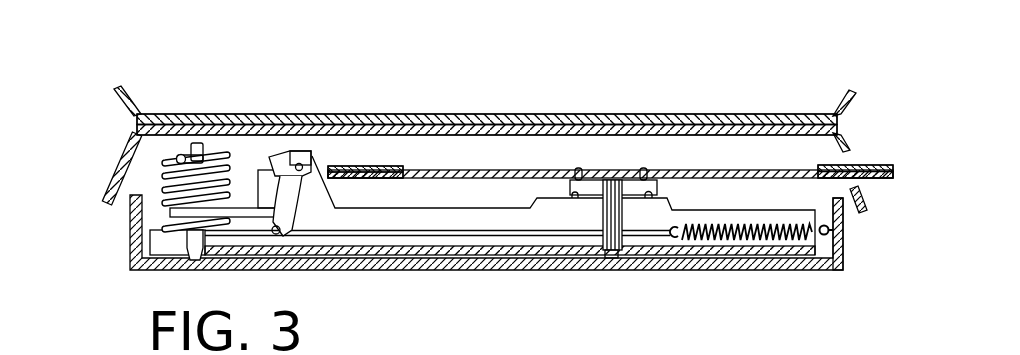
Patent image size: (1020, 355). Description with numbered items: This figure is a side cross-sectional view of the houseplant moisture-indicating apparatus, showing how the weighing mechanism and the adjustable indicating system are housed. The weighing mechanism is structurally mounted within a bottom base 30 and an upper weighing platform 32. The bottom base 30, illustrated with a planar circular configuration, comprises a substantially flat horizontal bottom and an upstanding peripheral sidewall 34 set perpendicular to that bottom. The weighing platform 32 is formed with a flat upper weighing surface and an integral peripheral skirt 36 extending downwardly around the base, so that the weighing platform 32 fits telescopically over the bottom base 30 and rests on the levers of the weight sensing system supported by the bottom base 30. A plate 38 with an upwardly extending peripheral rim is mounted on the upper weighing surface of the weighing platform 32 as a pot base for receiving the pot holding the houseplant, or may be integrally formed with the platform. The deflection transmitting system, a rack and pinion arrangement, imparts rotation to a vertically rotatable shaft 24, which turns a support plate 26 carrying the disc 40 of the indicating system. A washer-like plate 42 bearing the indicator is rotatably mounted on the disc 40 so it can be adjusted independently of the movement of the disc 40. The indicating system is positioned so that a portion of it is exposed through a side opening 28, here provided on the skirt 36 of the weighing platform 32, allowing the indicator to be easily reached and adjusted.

The vertically rotatable shaft 24 is at (610, 183).
The support plate 26 is at (630, 180).
The side opening 28 is at (850, 160).
The bottom base 30 is at (760, 262).
The upper weighing platform 32 is at (252, 120).
The upstanding peripheral sidewall 34 is at (847, 236).
The peripheral skirt 36 is at (122, 165).
The plate 38 is at (142, 112).
The disc 40 is at (498, 172).
The washer-like plate 42 is at (350, 170).